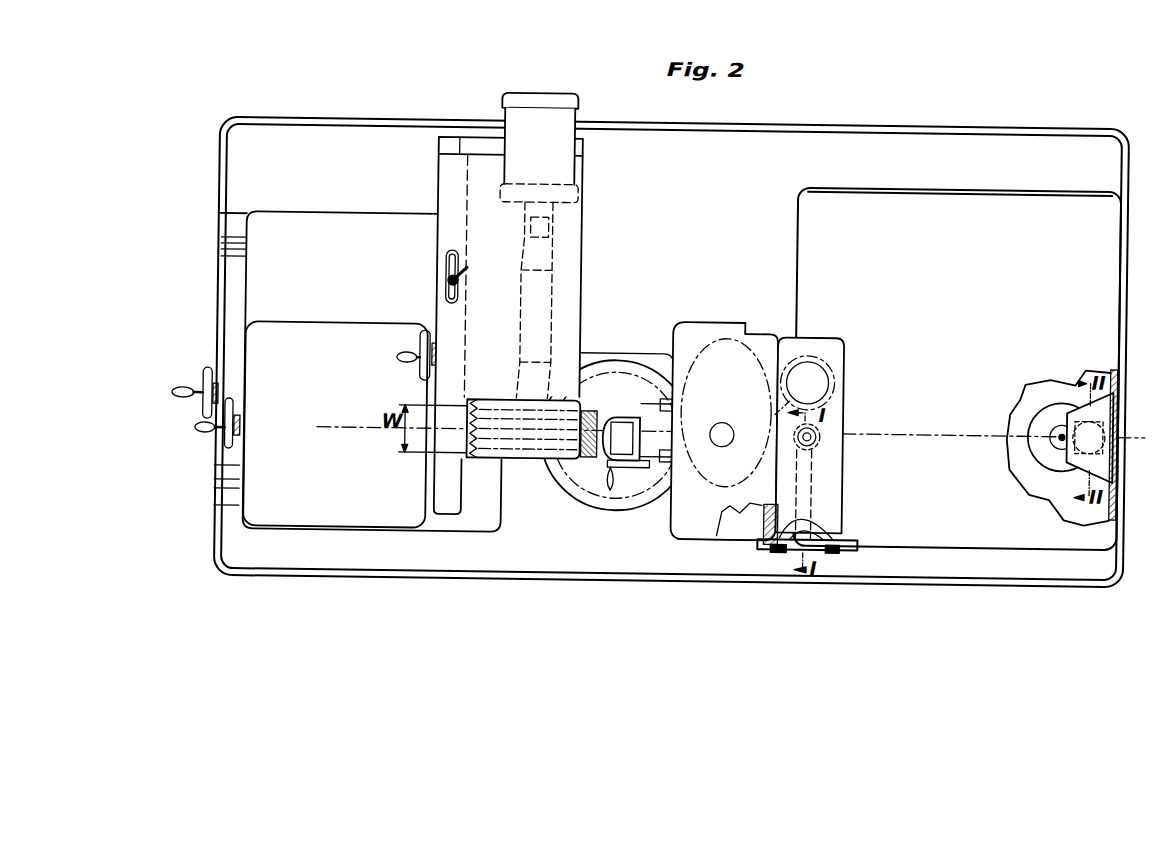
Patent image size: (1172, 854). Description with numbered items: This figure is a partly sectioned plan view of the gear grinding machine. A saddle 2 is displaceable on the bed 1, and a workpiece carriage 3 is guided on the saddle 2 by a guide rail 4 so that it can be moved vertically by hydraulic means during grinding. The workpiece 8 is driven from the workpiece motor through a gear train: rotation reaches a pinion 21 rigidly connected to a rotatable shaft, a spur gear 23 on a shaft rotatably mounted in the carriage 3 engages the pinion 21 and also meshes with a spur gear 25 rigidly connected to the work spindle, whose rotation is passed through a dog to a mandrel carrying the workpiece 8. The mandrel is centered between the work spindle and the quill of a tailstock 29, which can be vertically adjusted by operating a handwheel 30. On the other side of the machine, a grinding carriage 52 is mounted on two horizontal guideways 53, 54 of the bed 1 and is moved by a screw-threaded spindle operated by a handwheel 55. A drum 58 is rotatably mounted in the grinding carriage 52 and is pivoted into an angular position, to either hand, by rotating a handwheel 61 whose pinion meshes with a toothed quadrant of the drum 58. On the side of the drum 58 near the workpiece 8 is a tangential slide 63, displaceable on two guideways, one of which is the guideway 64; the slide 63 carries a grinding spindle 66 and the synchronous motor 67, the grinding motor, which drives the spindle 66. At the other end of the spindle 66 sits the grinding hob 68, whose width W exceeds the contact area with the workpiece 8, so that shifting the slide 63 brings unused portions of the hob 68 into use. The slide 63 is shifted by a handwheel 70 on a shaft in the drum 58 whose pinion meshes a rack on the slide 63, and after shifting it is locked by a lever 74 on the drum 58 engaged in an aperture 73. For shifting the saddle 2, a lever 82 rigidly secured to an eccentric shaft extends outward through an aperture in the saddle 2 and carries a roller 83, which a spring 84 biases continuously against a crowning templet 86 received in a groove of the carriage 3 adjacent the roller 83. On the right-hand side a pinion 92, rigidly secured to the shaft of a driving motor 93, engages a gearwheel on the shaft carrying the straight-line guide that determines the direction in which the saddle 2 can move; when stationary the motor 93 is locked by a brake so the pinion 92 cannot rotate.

The bed 1 is at (924, 128).
The saddle 2 is at (960, 204).
The workpiece carriage 3 is at (690, 525).
The guide rail 4 is at (776, 414).
The workpiece 8 is at (601, 444).
The pinion 21 is at (827, 368).
The spur gear 23 is at (700, 350).
The spur gear 25 is at (644, 505).
The tailstock 29 is at (641, 407).
The handwheel 30 is at (638, 462).
The grinding carriage 52 is at (392, 489).
The horizontal guideway 53 is at (221, 253).
The horizontal guideway 54 is at (224, 491).
The handwheel 55 is at (202, 378).
The drum 58 is at (449, 503).
The handwheel 61 is at (226, 448).
The tangential slide 63 is at (581, 249).
The guideway 64 is at (452, 150).
The grinding spindle 66 is at (554, 297).
The synchronous motor 67 is at (544, 94).
The grinding hob 68 is at (593, 453).
The handwheel 70 is at (418, 376).
The aperture 73 is at (444, 261).
The lever 74 is at (472, 270).
The lever 82 is at (815, 473).
The roller 83 is at (790, 548).
The spring 84 is at (821, 548).
The crowning templet 86 is at (775, 546).
The pinion 92 is at (1049, 425).
The driving motor 93 is at (1048, 427).